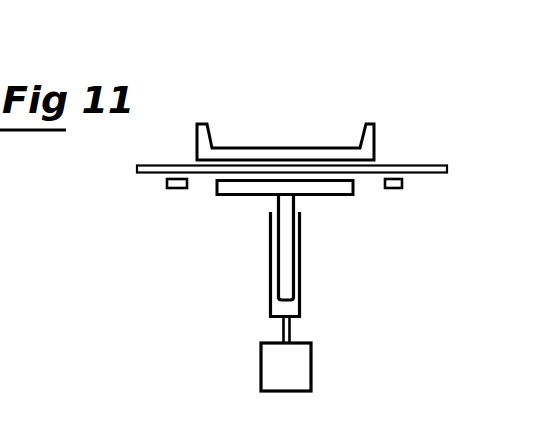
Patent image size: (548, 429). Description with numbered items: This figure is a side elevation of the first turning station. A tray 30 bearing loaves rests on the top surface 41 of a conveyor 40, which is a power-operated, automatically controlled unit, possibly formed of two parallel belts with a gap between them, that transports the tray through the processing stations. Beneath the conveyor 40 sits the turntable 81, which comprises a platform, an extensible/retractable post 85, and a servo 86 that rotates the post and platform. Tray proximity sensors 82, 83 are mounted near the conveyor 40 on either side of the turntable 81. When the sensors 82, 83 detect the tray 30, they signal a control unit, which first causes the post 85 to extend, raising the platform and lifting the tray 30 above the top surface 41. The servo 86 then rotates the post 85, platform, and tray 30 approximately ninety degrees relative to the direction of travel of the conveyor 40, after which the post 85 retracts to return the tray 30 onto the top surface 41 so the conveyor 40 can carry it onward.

The tray 30 is at (300, 147).
The top surface 41 is at (412, 165).
The conveyor 40 is at (430, 188).
The tray proximity sensor 82 is at (176, 189).
The tray proximity sensor 83 is at (392, 189).
The turntable 81 is at (222, 271).
The extensible/retractable post 85 is at (316, 249).
The servo 86 is at (309, 367).